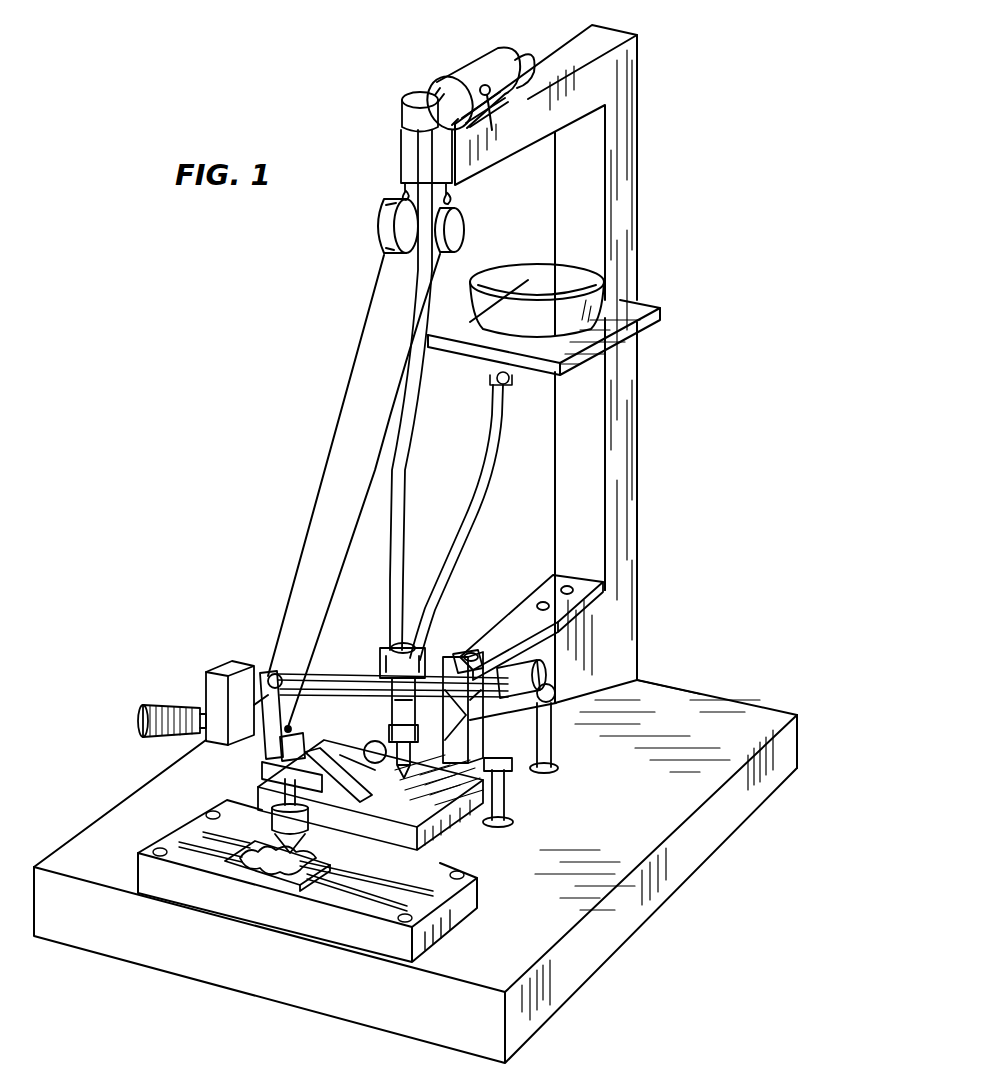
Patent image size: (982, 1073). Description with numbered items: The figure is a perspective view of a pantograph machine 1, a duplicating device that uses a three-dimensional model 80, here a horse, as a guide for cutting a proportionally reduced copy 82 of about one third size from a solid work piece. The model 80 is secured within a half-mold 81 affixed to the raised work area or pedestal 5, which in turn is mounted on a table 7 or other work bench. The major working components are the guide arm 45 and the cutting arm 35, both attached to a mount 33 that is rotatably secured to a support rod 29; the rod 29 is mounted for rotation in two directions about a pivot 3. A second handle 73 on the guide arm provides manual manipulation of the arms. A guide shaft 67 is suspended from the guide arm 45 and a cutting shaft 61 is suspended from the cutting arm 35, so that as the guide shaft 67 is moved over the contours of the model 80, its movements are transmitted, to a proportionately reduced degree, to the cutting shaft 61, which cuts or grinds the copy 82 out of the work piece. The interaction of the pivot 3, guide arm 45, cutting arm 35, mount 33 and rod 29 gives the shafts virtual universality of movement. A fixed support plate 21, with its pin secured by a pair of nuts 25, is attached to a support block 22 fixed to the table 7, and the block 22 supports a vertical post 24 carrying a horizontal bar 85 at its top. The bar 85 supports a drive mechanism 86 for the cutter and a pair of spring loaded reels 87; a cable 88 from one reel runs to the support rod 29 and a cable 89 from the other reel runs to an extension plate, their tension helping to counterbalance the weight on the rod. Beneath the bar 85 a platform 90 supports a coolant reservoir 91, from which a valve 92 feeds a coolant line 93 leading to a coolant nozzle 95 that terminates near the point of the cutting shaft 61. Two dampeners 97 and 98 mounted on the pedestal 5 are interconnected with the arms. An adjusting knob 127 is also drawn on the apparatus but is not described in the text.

The pantograph machine 1 is at (684, 216).
The pivot 3 is at (468, 628).
The pedestal 5 is at (622, 736).
The table 7 is at (820, 735).
The support plate 21 is at (492, 634).
The support block 22 is at (597, 668).
The vertical post 24 is at (640, 598).
The nuts 25 is at (498, 662).
The support rod 29 is at (440, 645).
The mount 33 is at (342, 665).
The cutting arm 35 is at (394, 737).
The guide arm 45 is at (268, 755).
The cutting shaft 61 is at (414, 824).
The guide shaft 67 is at (270, 812).
The second handle 73 is at (228, 790).
The model 80 is at (308, 853).
The half-mold 81 is at (290, 884).
The copy 82 is at (350, 764).
The horizontal bar 85 is at (640, 38).
The drive mechanism 86 is at (475, 48).
The spring loaded reels 87 is at (374, 224).
The cable 88 is at (347, 339).
The cable 89 is at (394, 442).
The platform 90 is at (662, 311).
The coolant reservoir 91 is at (540, 262).
The valve 92 is at (510, 380).
The coolant line 93 is at (496, 456).
The coolant nozzle 95 is at (472, 728).
The dampener 97 is at (553, 748).
The dampener 98 is at (506, 802).
The adjusting knob 127 is at (172, 708).